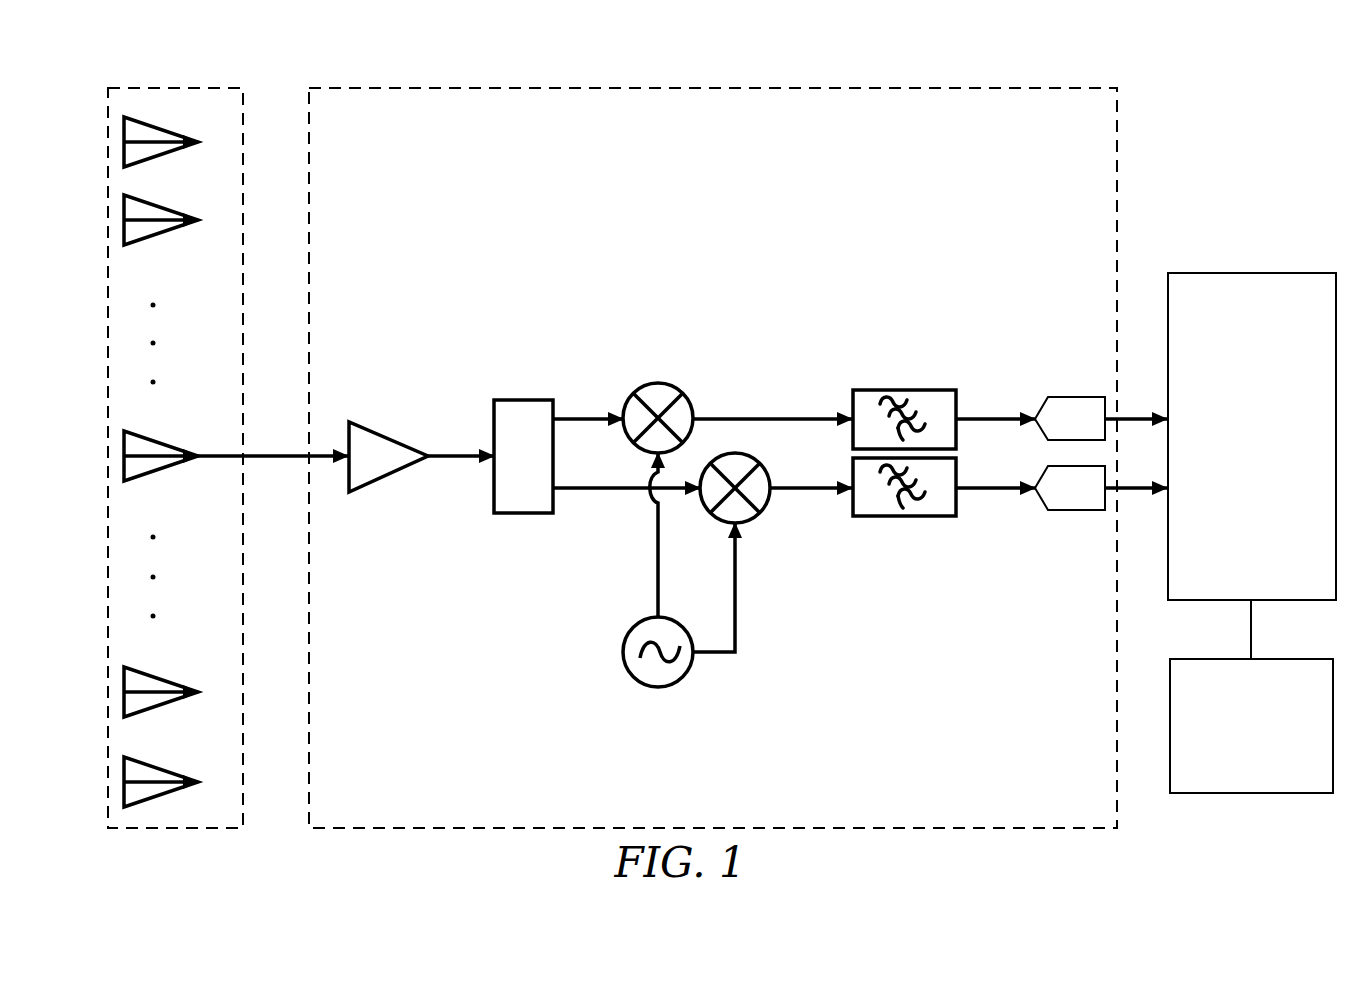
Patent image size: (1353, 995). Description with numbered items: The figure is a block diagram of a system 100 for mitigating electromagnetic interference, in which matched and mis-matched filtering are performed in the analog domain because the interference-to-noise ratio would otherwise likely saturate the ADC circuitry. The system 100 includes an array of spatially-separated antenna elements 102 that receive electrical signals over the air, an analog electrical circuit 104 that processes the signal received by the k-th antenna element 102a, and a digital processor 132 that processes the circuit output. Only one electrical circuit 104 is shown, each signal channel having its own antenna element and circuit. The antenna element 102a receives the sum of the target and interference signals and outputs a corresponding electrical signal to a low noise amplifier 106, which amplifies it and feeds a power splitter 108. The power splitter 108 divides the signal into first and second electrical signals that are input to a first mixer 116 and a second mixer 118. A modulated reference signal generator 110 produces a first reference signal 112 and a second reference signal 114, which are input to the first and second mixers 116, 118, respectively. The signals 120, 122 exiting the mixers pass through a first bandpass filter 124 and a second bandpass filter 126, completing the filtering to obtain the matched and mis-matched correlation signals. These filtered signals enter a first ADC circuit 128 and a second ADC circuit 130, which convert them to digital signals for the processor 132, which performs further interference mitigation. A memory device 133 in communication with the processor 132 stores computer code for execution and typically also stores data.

The system 100 is at (1010, 68).
The array of spatially-separated antenna elements 102 is at (200, 88).
The antenna element 102a is at (153, 437).
The analog electrical circuit 104 is at (657, 88).
The low noise amplifier 106 is at (371, 428).
The power splitter 108 is at (529, 400).
The modulated reference signal generator 110 is at (645, 627).
The first reference signal 112 is at (646, 548).
The second reference signal 114 is at (749, 582).
The first mixer 116 is at (661, 383).
The second mixer 118 is at (741, 456).
The signal exiting first mixer 120 is at (781, 404).
The signal exiting second mixer 122 is at (807, 503).
The first bandpass filter 124 is at (925, 390).
The second bandpass filter 126 is at (940, 516).
The first ADC circuit 128 is at (1055, 397).
The second ADC circuit 130 is at (1057, 510).
The digital processor 132 is at (1252, 436).
The memory device 133 is at (1251, 726).